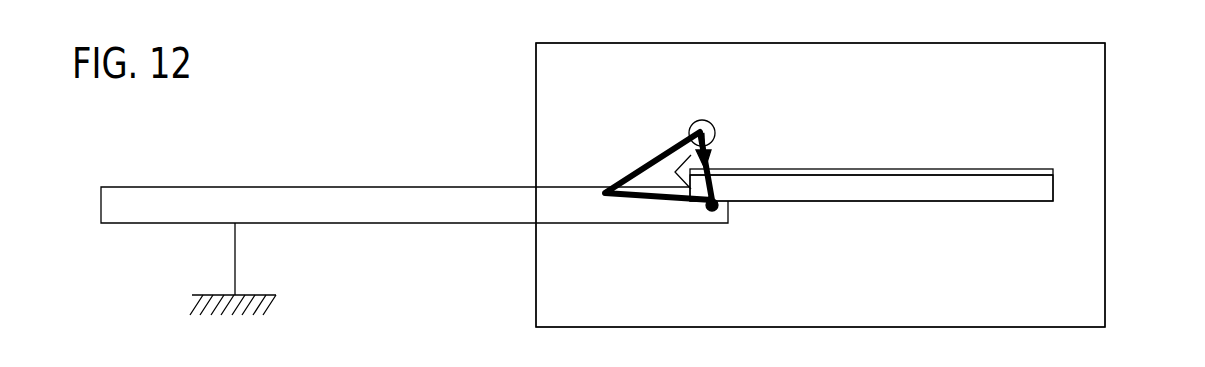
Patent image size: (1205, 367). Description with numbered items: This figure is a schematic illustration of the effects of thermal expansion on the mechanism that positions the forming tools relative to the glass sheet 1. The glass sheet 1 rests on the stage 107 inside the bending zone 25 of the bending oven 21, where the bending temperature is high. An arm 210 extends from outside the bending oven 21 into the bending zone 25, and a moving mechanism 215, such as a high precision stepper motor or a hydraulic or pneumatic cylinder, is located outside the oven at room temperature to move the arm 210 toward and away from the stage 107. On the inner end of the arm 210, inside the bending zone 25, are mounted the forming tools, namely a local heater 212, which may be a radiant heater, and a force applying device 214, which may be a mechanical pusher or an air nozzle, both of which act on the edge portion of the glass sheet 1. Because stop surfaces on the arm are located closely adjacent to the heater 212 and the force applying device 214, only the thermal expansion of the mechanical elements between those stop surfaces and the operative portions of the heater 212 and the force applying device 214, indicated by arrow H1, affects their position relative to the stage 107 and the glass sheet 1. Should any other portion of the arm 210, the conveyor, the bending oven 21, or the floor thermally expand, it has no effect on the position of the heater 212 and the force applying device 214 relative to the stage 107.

The glass sheet 1 is at (930, 172).
The bending oven 21 is at (1086, 87).
The bending zone 25 is at (820, 185).
The stage 107 is at (923, 193).
The arm 210 is at (328, 201).
The local heater 212 is at (717, 126).
The force applying device 214 is at (688, 198).
The moving mechanism 215 is at (276, 297).
The arrow H1 is at (662, 153).